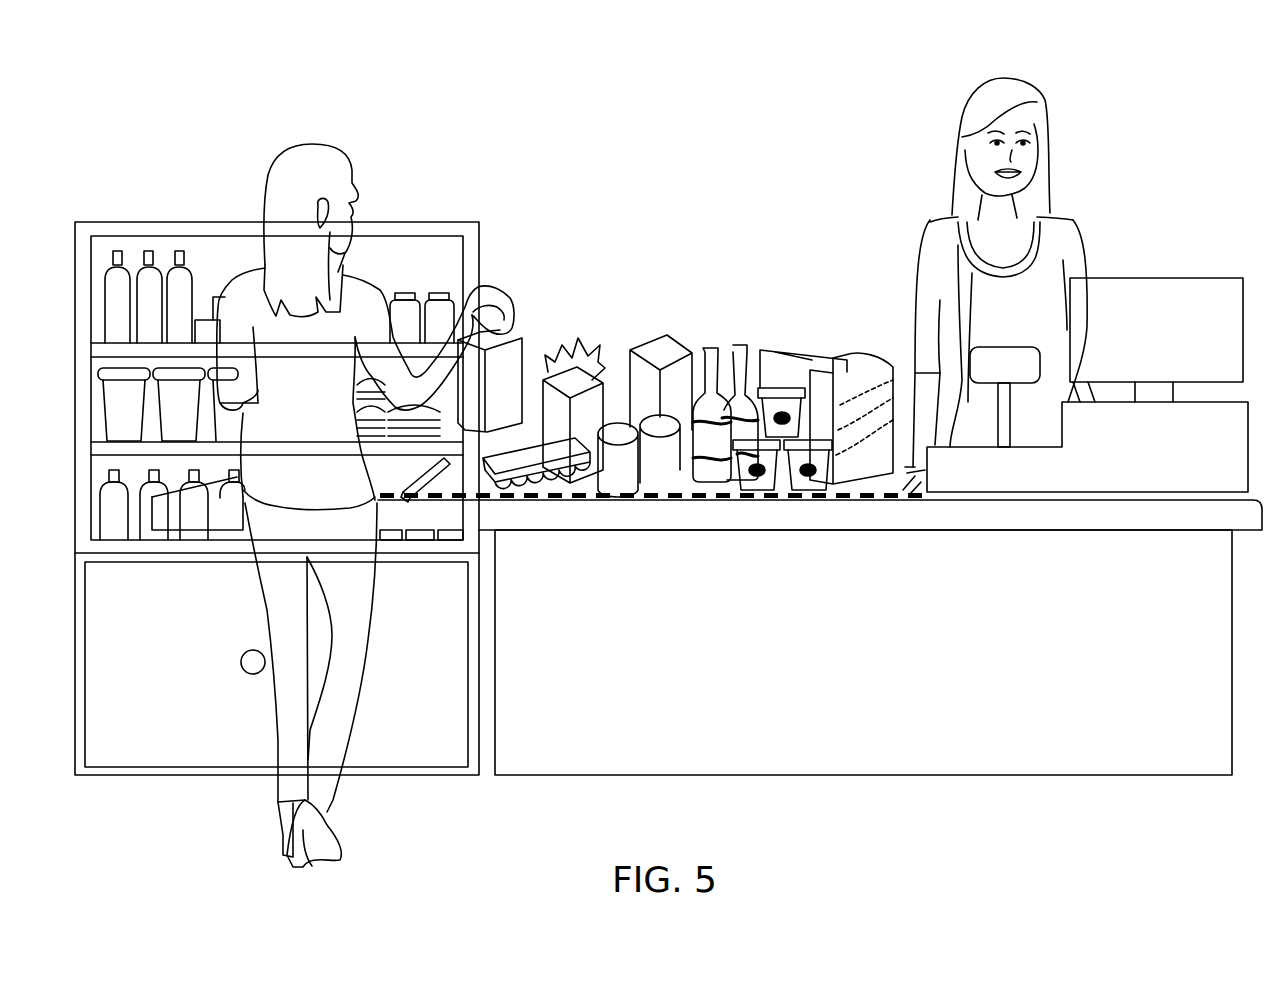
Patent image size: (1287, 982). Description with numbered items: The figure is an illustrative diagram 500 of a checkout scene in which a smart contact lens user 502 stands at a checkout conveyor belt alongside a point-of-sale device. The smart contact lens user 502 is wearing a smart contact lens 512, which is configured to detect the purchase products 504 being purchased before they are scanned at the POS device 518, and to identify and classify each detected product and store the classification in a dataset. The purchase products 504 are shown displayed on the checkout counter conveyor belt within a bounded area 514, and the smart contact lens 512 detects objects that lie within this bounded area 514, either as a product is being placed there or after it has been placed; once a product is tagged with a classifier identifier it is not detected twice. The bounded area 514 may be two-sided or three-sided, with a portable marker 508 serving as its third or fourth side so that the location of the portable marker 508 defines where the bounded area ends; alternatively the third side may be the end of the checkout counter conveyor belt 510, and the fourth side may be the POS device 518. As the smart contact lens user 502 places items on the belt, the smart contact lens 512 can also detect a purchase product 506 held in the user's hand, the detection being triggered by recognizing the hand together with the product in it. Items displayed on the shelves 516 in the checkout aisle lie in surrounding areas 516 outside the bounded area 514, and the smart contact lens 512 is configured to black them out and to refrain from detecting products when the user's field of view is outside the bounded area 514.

The illustrative diagram 500 is at (221, 70).
The smart contact lens user 502 is at (270, 177).
The purchase products 504 is at (725, 340).
The purchase product 506 is at (518, 333).
The portable marker 508 is at (425, 487).
The end of the checkout counter conveyor belt 510 is at (172, 490).
The smart contact lens 512 is at (357, 206).
The bounded area 514 is at (708, 497).
The shelves 516 is at (105, 221).
The POS device 518 is at (1167, 278).